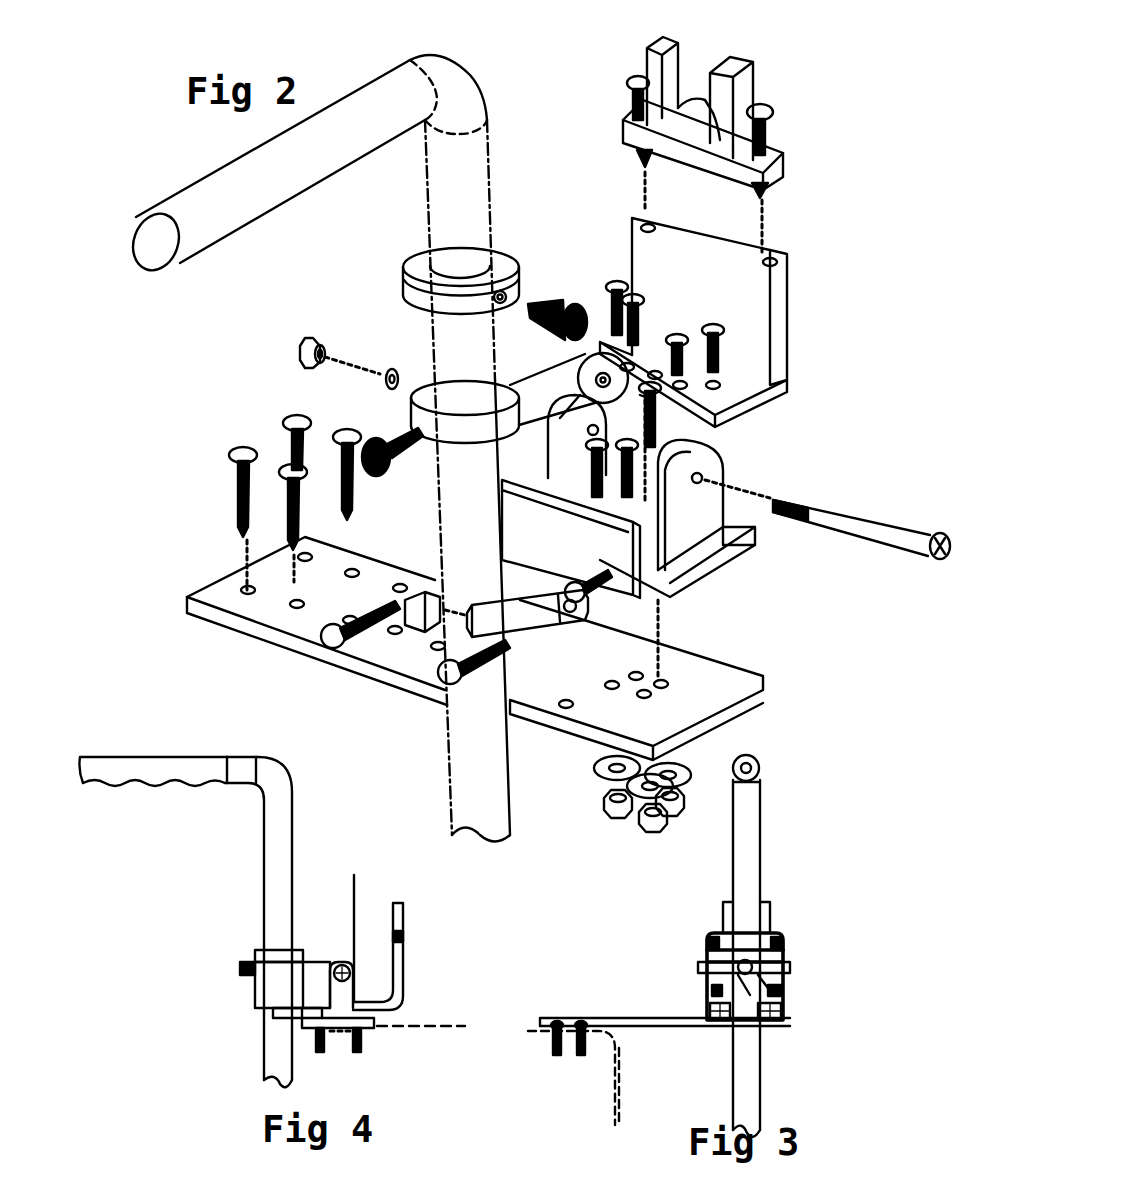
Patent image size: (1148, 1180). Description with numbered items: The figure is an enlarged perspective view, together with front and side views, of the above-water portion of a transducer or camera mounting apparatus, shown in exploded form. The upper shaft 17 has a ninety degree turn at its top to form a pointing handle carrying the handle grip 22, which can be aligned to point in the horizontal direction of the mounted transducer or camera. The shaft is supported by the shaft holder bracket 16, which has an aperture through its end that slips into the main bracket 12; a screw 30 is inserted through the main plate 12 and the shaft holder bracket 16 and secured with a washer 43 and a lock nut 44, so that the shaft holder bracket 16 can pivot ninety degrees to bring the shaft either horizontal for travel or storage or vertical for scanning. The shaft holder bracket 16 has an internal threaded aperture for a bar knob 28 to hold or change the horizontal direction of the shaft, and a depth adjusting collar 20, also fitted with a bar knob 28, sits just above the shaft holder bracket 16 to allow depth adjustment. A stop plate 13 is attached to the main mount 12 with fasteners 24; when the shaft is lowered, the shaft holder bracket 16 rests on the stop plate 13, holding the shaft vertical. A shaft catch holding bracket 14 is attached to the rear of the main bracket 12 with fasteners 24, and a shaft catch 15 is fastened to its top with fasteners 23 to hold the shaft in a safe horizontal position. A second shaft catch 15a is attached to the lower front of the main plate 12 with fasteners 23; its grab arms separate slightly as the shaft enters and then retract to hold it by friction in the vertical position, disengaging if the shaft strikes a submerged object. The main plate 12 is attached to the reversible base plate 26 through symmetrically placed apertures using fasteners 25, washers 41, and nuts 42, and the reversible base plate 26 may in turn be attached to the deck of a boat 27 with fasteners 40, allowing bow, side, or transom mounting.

In FIG. 2, the main bracket 12 is at (725, 570).
In FIG. 4, the main bracket 12 is at (357, 997).
In FIG. 2, the stop plate 13 is at (630, 552).
In FIG. 3, the stop plate 13 is at (785, 988).
In FIG. 4, the stop plate 13 is at (327, 978).
In FIG. 2, the shaft catch holding bracket 14 is at (792, 320).
In FIG. 4, the shaft catch holding bracket 14 is at (410, 978).
In FIG. 2, the shaft catch 15 is at (756, 80).
In FIG. 3, the shaft catch 15 is at (720, 912).
In FIG. 4, the shaft catch 15 is at (407, 907).
In FIG. 2, the shaft catch 15a is at (417, 627).
In FIG. 3, the shaft catch 15a is at (718, 1000).
In FIG. 4, the shaft catch 15a is at (280, 1013).
In FIG. 2, the shaft holder bracket 16 is at (597, 390).
In FIG. 3, the shaft holder bracket 16 is at (785, 1027).
In FIG. 4, the shaft holder bracket 16 is at (310, 965).
In FIG. 2, the upper shaft 17 is at (462, 352).
In FIG. 3, the upper shaft 17 is at (730, 838).
In FIG. 4, the upper shaft 17 is at (265, 858).
In FIG. 2, the depth adjusting collar 20 is at (405, 250).
In FIG. 3, the depth adjusting collar 20 is at (718, 945).
In FIG. 4, the depth adjusting collar 20 is at (257, 953).
In FIG. 3, the handle grip 22 is at (757, 755).
In FIG. 4, the handle grip 22 is at (140, 787).
In FIG. 2, the fasteners 23 is at (645, 85).
In FIG. 3, the fasteners 23 is at (777, 932).
In FIG. 4, the fasteners 23 is at (402, 935).
In FIG. 2, the fasteners 24 is at (740, 335).
In FIG. 2, the fasteners 25 is at (650, 400).
In FIG. 2, the reversible base plate 26 is at (220, 578).
In FIG. 3, the reversible base plate 26 is at (657, 1030).
In FIG. 4, the reversible base plate 26 is at (377, 1027).
In FIG. 3, the boat 27 is at (620, 1103).
In FIG. 4, the boat 27 is at (400, 1027).
In FIG. 2, the bar knob 28 is at (585, 335).
In FIG. 3, the bar knob 28 is at (762, 962).
In FIG. 4, the bar knob 28 is at (242, 968).
In FIG. 2, the screw 30 is at (945, 545).
In FIG. 2, the fasteners 40 is at (240, 447).
In FIG. 2, the washers 41 is at (597, 764).
In FIG. 2, the nuts 42 is at (603, 793).
In FIG. 2, the washer 43 is at (395, 368).
In FIG. 2, the lock nut 44 is at (300, 345).